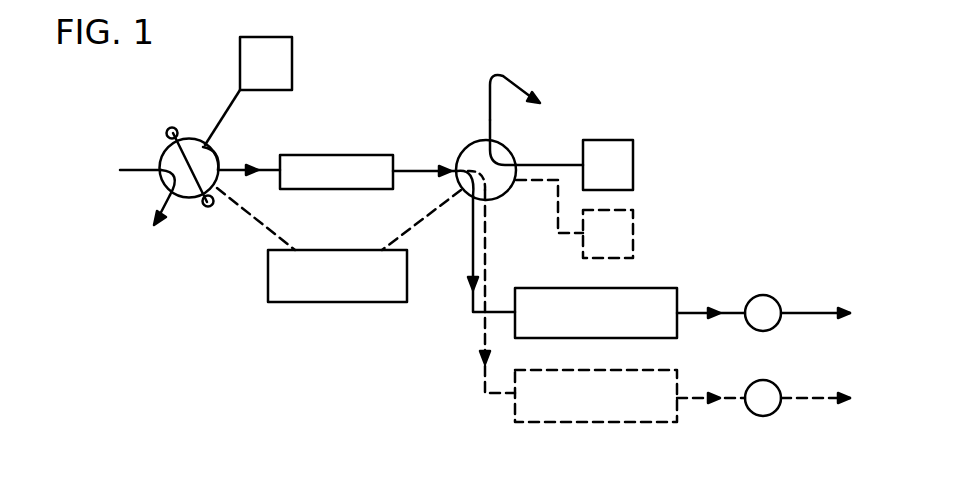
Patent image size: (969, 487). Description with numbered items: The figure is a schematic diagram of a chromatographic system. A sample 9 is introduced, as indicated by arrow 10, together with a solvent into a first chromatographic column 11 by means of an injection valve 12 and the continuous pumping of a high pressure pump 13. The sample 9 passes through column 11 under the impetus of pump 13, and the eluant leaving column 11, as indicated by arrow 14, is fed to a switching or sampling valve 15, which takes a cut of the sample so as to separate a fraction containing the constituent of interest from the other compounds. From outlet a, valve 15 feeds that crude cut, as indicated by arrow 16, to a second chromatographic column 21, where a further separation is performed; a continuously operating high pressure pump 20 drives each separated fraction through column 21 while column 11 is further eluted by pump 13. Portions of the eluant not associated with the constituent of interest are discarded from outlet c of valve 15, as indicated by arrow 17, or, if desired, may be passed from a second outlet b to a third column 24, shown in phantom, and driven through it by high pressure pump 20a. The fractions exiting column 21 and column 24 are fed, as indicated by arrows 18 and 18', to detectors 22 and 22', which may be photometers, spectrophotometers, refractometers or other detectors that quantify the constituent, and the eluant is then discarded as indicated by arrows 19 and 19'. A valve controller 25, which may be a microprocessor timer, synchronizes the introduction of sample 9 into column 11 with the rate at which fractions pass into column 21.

The sample 9 is at (94, 181).
The arrow 10 is at (232, 170).
The first chromatographic column 11 is at (343, 155).
The injection valve 12 is at (188, 197).
The high pressure pump 13 is at (292, 50).
The arrow 14 is at (410, 170).
The switching or sampling valve 15 is at (507, 150).
The arrow 16 is at (483, 327).
The arrow 17 is at (493, 78).
The arrow 18 is at (711, 289).
The arrow 18' is at (713, 379).
The arrow 19 is at (819, 289).
The arrow 19' is at (821, 379).
The high pressure pump 20 is at (633, 153).
The high pressure pump 20a is at (633, 228).
The second chromatographic column 21 is at (652, 288).
The detector 22 is at (776, 296).
The detector 22' is at (778, 385).
The third column 24 is at (677, 412).
The valve controller 25 is at (322, 302).